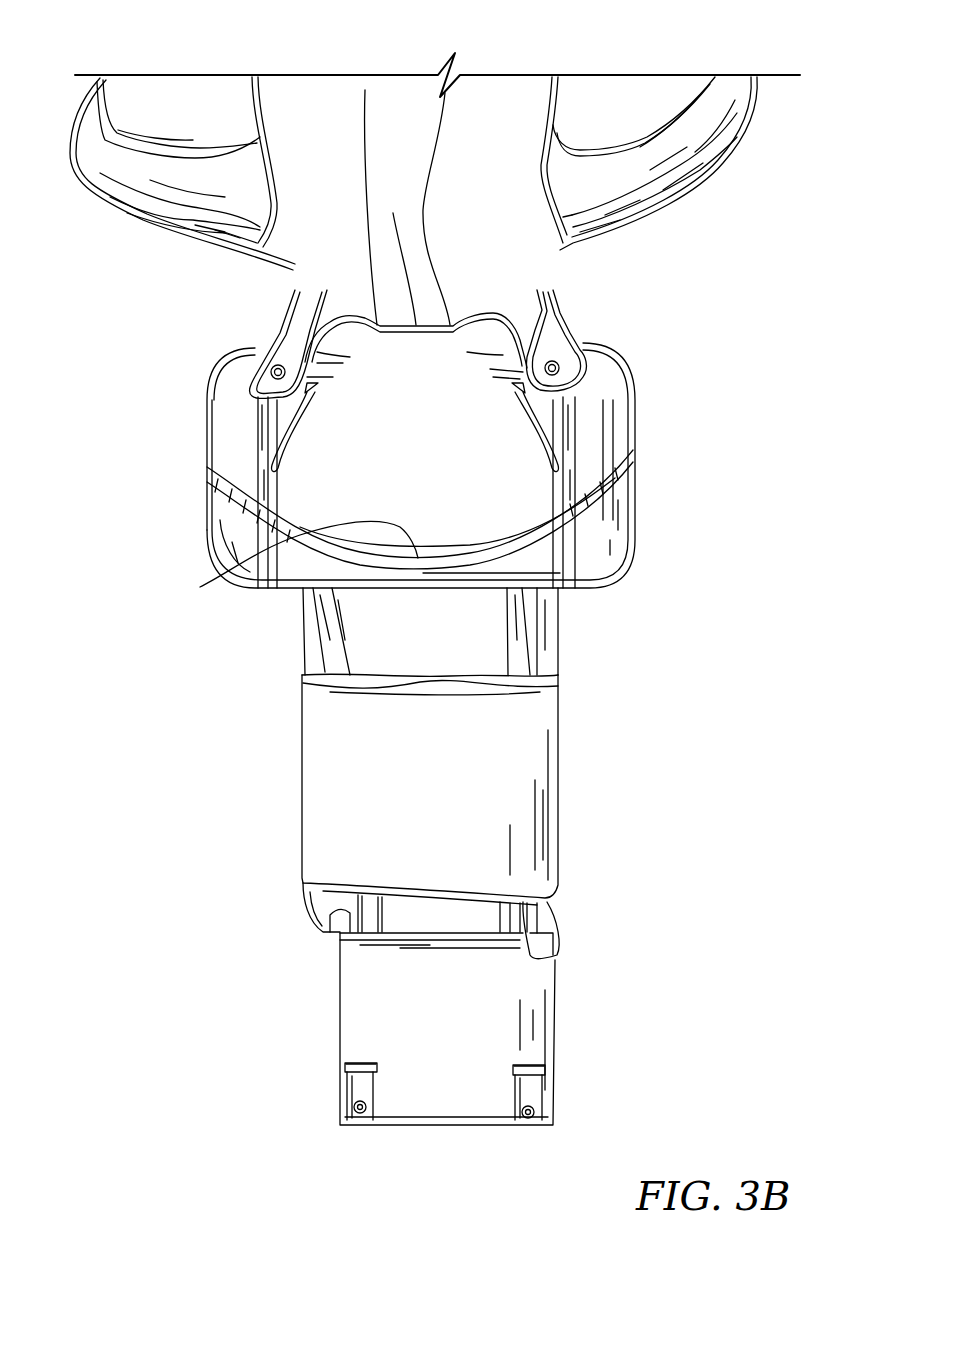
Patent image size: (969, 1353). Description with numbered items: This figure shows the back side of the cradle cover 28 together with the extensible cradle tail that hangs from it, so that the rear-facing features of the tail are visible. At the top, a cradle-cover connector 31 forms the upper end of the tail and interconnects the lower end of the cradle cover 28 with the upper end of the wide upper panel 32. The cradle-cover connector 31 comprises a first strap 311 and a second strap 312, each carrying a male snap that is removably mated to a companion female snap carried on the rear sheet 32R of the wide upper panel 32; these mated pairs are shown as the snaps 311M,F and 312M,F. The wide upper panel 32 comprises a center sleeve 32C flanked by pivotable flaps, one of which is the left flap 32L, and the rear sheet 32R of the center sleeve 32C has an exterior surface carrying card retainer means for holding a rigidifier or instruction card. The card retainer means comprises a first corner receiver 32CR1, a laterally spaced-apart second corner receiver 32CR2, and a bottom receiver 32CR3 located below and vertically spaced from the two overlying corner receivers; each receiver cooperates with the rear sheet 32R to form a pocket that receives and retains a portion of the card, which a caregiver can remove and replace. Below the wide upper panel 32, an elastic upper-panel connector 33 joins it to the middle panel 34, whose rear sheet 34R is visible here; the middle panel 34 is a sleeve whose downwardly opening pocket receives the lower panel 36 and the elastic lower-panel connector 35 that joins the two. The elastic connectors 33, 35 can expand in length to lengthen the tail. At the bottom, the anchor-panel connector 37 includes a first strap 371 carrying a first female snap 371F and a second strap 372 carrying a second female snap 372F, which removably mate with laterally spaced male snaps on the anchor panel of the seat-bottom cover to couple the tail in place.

The cradle cover 28 is at (674, 90).
The cradle-cover connector 31 is at (281, 308).
The first strap 311 is at (265, 341).
The male snap and female snap 311M,F is at (252, 381).
The second strap 312 is at (548, 313).
The male snap and female snap 312M,F is at (562, 369).
The wide upper panel 32 is at (198, 489).
The rear sheet 32R is at (235, 527).
The left flap 32L is at (613, 513).
The first corner receiver 32CR1 is at (272, 430).
The second corner receiver 32CR2 is at (563, 413).
The bottom receiver 32CR3 is at (200, 587).
The center sleeve 32C is at (567, 583).
The elastic upper-panel connector 33 is at (503, 635).
The middle panel 34 is at (301, 780).
The rear sheet 34R is at (447, 468).
The elastic lower-panel connector 35 is at (492, 915).
The lower panel 36 is at (332, 1011).
The anchor-panel connector 37 is at (510, 1096).
The first strap 371 is at (355, 1087).
The second strap 372 is at (533, 1087).
The first female snap 371F is at (360, 1115).
The second female snap 372F is at (530, 1120).